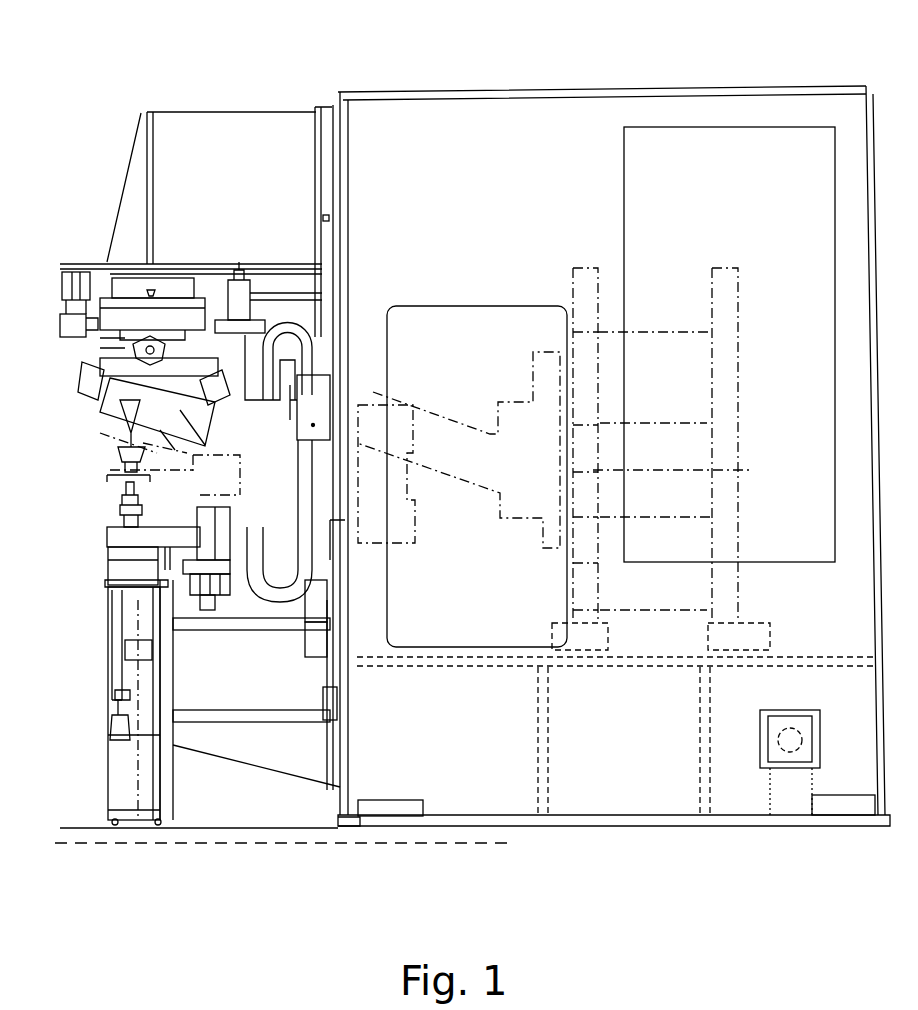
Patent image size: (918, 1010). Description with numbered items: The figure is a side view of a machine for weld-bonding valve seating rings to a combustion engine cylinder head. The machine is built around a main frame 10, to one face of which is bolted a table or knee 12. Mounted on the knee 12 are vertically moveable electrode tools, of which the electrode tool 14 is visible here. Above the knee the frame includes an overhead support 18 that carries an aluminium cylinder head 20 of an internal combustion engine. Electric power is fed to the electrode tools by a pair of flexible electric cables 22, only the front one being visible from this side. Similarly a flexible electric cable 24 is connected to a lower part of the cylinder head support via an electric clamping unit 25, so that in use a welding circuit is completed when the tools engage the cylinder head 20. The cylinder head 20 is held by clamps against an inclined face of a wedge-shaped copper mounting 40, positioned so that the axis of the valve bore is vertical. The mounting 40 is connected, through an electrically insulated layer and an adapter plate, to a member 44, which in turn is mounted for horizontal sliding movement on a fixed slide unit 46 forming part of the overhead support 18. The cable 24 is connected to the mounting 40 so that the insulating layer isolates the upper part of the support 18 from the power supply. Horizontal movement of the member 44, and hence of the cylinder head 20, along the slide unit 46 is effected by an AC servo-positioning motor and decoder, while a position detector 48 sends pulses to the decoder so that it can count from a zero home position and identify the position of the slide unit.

The main frame 10 is at (543, 88).
The table or knee 12 is at (208, 730).
The electrode tool 14 is at (120, 505).
The overhead support 18 is at (203, 152).
The cylinder head 20 is at (105, 414).
The flexible electric cable 22 is at (330, 563).
The flexible electric cable 24 is at (330, 362).
The electric clamping unit 25 is at (332, 387).
The wedge-shaped mounting 40 is at (180, 395).
The member 44 is at (95, 346).
The fixed slide unit 46 is at (135, 318).
The position detector 48 is at (62, 284).